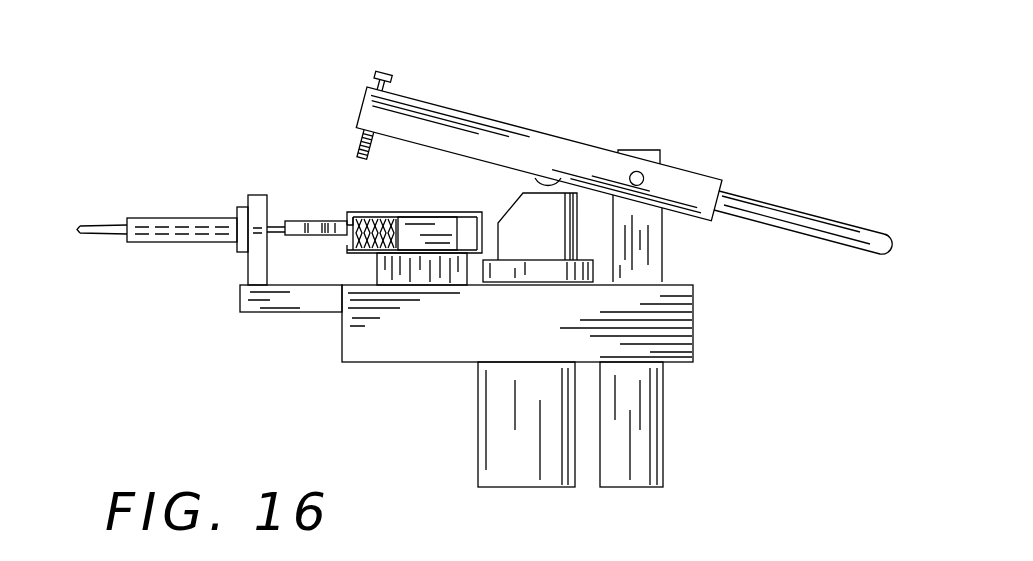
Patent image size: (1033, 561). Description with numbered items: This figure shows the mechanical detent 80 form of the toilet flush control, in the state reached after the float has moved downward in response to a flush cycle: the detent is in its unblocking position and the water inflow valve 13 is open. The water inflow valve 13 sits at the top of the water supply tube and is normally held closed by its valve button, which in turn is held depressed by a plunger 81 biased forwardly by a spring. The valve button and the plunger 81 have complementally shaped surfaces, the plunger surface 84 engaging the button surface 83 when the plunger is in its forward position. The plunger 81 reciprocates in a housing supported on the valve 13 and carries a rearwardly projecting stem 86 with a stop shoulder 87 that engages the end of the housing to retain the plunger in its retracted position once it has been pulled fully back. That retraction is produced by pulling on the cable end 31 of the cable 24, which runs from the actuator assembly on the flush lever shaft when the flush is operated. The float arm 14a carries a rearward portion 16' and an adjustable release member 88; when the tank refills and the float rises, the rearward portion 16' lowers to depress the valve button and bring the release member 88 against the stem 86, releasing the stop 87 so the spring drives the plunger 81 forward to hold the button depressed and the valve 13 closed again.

The water inflow valve 13 is at (693, 342).
The cable 24 is at (153, 217).
The cable end 31 is at (277, 220).
The stem 86 is at (297, 236).
The plunger 81 is at (420, 225).
The stop shoulder 87 is at (368, 222).
The complementally shaped surface of plunger 84 is at (462, 218).
The complementally shaped surface of valve button 83 is at (507, 214).
The rearward portion of float arm 16' is at (539, 123).
The adjustable release member 88 is at (352, 143).
The float arm 14a is at (800, 207).
The mechanical detent 80 is at (705, 110).